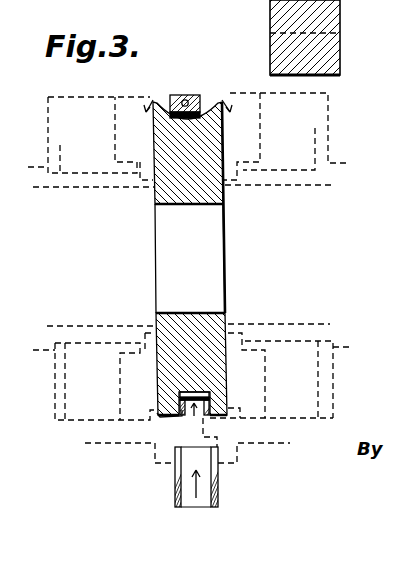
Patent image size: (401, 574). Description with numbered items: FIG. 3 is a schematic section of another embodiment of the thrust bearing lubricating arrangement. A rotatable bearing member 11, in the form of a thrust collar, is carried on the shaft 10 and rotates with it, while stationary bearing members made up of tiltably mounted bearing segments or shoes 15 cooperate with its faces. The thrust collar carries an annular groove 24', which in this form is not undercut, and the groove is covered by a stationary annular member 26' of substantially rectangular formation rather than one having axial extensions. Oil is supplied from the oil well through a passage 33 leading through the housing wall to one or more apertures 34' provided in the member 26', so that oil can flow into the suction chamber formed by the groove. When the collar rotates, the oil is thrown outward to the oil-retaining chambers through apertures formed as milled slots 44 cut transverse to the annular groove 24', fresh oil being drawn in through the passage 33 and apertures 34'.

The shaft 10 is at (100, 192).
The rotatable bearing member 11 is at (207, 188).
The bearing segments or shoes 15 is at (118, 118).
The annular groove 24' is at (238, 386).
The stationary annular member 26' is at (200, 79).
The passage 33 is at (218, 481).
The apertures 34' is at (145, 450).
The milled slots 44 is at (219, 116).